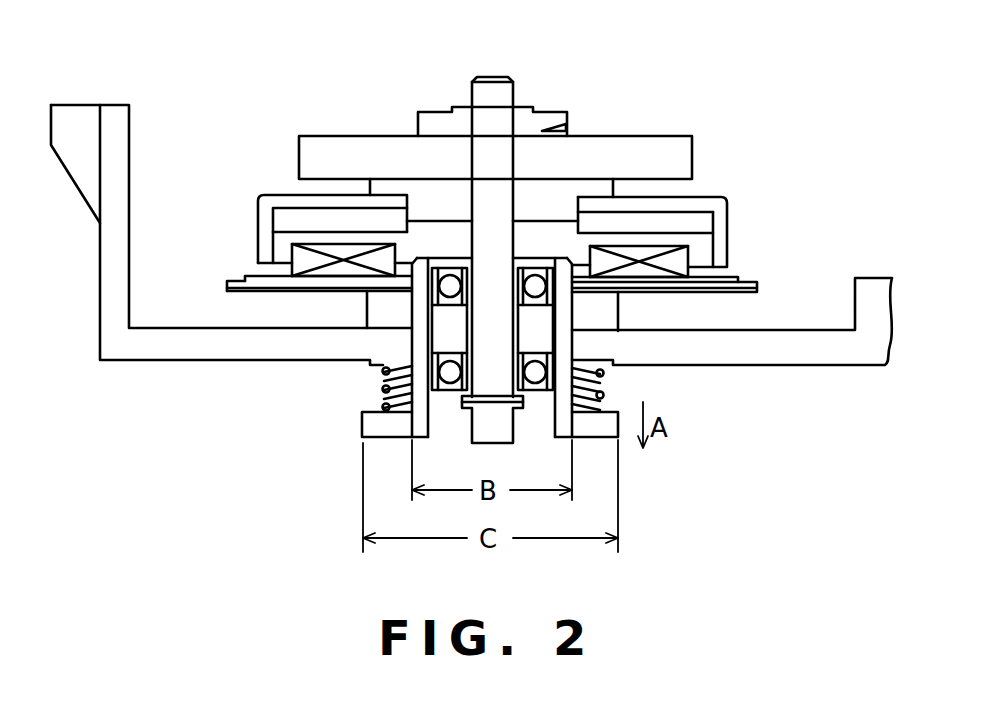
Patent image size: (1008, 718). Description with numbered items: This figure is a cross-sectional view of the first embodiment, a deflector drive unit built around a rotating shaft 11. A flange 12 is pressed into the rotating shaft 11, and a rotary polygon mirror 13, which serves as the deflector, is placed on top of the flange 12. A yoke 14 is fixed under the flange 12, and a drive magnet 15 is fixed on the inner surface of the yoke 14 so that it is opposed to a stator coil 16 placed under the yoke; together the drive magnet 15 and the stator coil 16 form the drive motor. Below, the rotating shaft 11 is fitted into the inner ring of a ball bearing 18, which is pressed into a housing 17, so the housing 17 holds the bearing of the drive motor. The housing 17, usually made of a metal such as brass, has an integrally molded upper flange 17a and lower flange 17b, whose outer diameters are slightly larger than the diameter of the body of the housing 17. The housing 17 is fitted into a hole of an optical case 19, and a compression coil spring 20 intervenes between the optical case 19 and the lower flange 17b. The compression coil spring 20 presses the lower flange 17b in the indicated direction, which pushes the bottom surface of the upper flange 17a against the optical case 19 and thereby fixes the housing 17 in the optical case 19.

The rotating shaft 11 is at (485, 88).
The flange 12 is at (540, 208).
The rotary polygon mirror 13 is at (652, 155).
The yoke 14 is at (727, 223).
The drive magnet 15 is at (678, 225).
The stator coil 16 is at (676, 262).
The housing 17 is at (373, 308).
The upper flange 17a is at (608, 312).
The lower flange 17b is at (617, 422).
The ball bearing 18 is at (452, 385).
The optical case 19 is at (825, 350).
The compression coil spring 20 is at (384, 386).